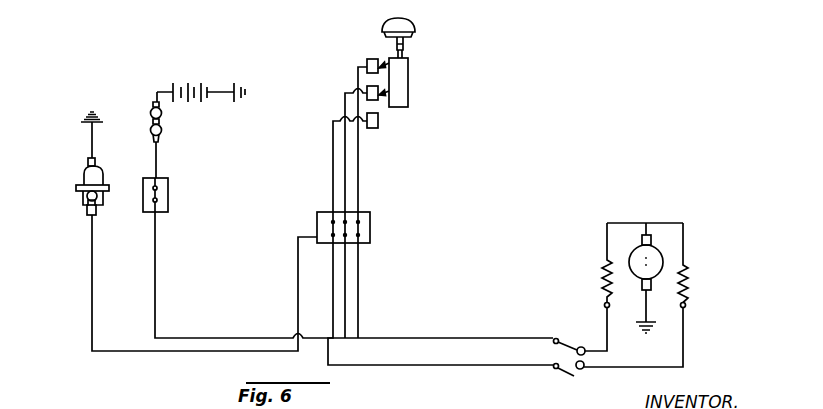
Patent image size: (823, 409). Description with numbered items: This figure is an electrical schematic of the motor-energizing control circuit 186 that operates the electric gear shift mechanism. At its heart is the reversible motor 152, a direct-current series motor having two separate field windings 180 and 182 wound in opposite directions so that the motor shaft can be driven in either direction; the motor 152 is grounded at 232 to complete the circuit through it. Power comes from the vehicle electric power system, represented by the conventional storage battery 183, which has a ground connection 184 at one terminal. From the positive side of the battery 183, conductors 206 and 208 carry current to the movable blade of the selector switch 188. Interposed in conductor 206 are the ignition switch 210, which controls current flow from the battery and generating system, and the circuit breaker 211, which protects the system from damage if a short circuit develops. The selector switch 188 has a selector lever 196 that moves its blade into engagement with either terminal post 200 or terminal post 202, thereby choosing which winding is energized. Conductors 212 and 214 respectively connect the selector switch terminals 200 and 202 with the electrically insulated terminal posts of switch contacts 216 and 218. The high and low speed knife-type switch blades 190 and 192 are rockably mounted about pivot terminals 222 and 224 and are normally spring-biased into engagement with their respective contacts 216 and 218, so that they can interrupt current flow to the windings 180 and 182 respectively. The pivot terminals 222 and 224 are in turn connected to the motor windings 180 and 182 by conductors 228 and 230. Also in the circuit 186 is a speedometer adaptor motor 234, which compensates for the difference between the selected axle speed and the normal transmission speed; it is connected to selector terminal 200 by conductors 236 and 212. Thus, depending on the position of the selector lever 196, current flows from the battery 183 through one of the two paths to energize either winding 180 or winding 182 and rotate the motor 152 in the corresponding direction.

The reversible motor 152 is at (650, 232).
The field winding 180 is at (686, 267).
The field winding 182 is at (606, 263).
The storage battery 183 is at (181, 84).
The ground connection 184 is at (218, 91).
The motor-energizing control circuit 186 is at (328, 168).
The selector switch 188 is at (411, 83).
The high speed switch blade 190 is at (576, 377).
The low speed switch blade 192 is at (560, 349).
The selector lever 196 is at (408, 34).
The terminal post 200 is at (370, 129).
The terminal post 202 is at (369, 58).
The conductor 206 is at (158, 278).
The conductor 208 is at (344, 100).
The ignition switch 210 is at (162, 114).
The circuit breaker 211 is at (170, 190).
The conductor 212 is at (334, 257).
The conductor 214 is at (359, 290).
The switch contact 216 is at (553, 368).
The switch contact 218 is at (557, 334).
The pivot terminal 222 is at (585, 363).
The pivot terminal 224 is at (583, 347).
The conductor 228 is at (685, 328).
The conductor 230 is at (609, 348).
The ground 232 is at (647, 303).
The speedometer adaptor motor 234 is at (83, 178).
The conductor 236 is at (92, 262).